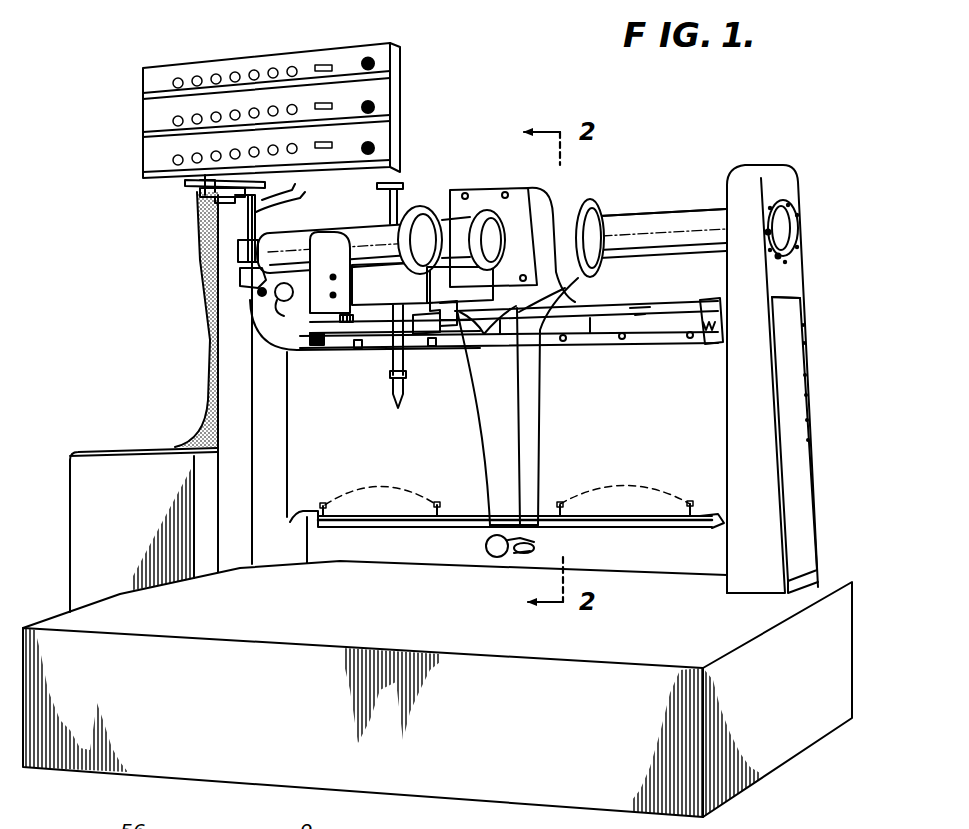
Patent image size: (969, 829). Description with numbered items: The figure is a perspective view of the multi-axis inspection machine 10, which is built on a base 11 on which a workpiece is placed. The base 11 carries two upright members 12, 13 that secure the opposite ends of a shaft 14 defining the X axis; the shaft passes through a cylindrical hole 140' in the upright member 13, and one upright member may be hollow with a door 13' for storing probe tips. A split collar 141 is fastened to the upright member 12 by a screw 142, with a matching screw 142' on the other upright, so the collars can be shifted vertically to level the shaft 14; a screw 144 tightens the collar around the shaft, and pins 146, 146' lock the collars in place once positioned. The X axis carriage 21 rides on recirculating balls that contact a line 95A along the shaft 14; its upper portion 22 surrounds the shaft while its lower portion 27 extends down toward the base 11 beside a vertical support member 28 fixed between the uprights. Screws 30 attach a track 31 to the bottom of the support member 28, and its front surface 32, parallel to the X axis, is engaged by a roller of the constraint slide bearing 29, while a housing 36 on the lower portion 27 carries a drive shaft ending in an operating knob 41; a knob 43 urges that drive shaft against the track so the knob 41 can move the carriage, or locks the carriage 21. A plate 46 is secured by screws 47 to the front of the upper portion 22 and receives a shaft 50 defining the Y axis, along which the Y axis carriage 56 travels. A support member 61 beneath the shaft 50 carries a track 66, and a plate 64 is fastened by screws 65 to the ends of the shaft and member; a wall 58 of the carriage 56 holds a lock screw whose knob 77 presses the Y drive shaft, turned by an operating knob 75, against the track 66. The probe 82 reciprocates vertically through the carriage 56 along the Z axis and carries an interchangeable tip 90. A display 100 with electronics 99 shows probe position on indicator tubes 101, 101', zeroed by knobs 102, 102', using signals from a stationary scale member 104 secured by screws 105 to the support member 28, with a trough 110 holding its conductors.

The inspection machine 10 is at (655, 160).
The base 11 is at (437, 689).
The upright member 12 is at (230, 378).
The upright member 13 is at (792, 379).
The door 13' is at (816, 337).
The shaft 14 is at (676, 216).
The X axis carriage 21 is at (540, 356).
The upper portion 22 is at (596, 214).
The lower portion 27 is at (498, 486).
The support member 28 is at (634, 415).
The constraint slide bearing 29 is at (538, 557).
The screws 30 is at (507, 488).
The track 31 is at (712, 530).
The front surface 32 is at (370, 522).
The housing 36 is at (535, 548).
The operating knob 41 is at (522, 556).
The knob 43 is at (486, 548).
The plate 46 is at (525, 192).
The screws 47 is at (487, 192).
The shaft 50 is at (378, 225).
The Y axis carriage 56 is at (420, 207).
The wall 58 is at (452, 274).
The support member 61 is at (368, 292).
The plate 64 is at (288, 304).
The screws 65 is at (337, 299).
The track 66 is at (486, 298).
The operating knob 75 is at (430, 334).
The knob 77 is at (472, 332).
The probe 82 is at (388, 373).
The tip 90 is at (396, 396).
The line 95A is at (302, 236).
The electronics 99 is at (98, 486).
The display 100 is at (280, 109).
The indicator tubes 101 is at (252, 58).
The indicator tubes 101' is at (209, 107).
The zeroing knob 102 is at (414, 54).
The zeroing knob 102' is at (415, 98).
The stationary scale member 104 is at (605, 340).
The screws 105 is at (690, 340).
The trough 110 is at (640, 312).
The cylindrical hole 140' is at (819, 206).
The split collar 141 is at (298, 208).
The screw 142 is at (208, 277).
The screw 142' is at (779, 246).
The screw 144 is at (250, 250).
The pins 146 is at (206, 302).
The pins 146' is at (777, 241).